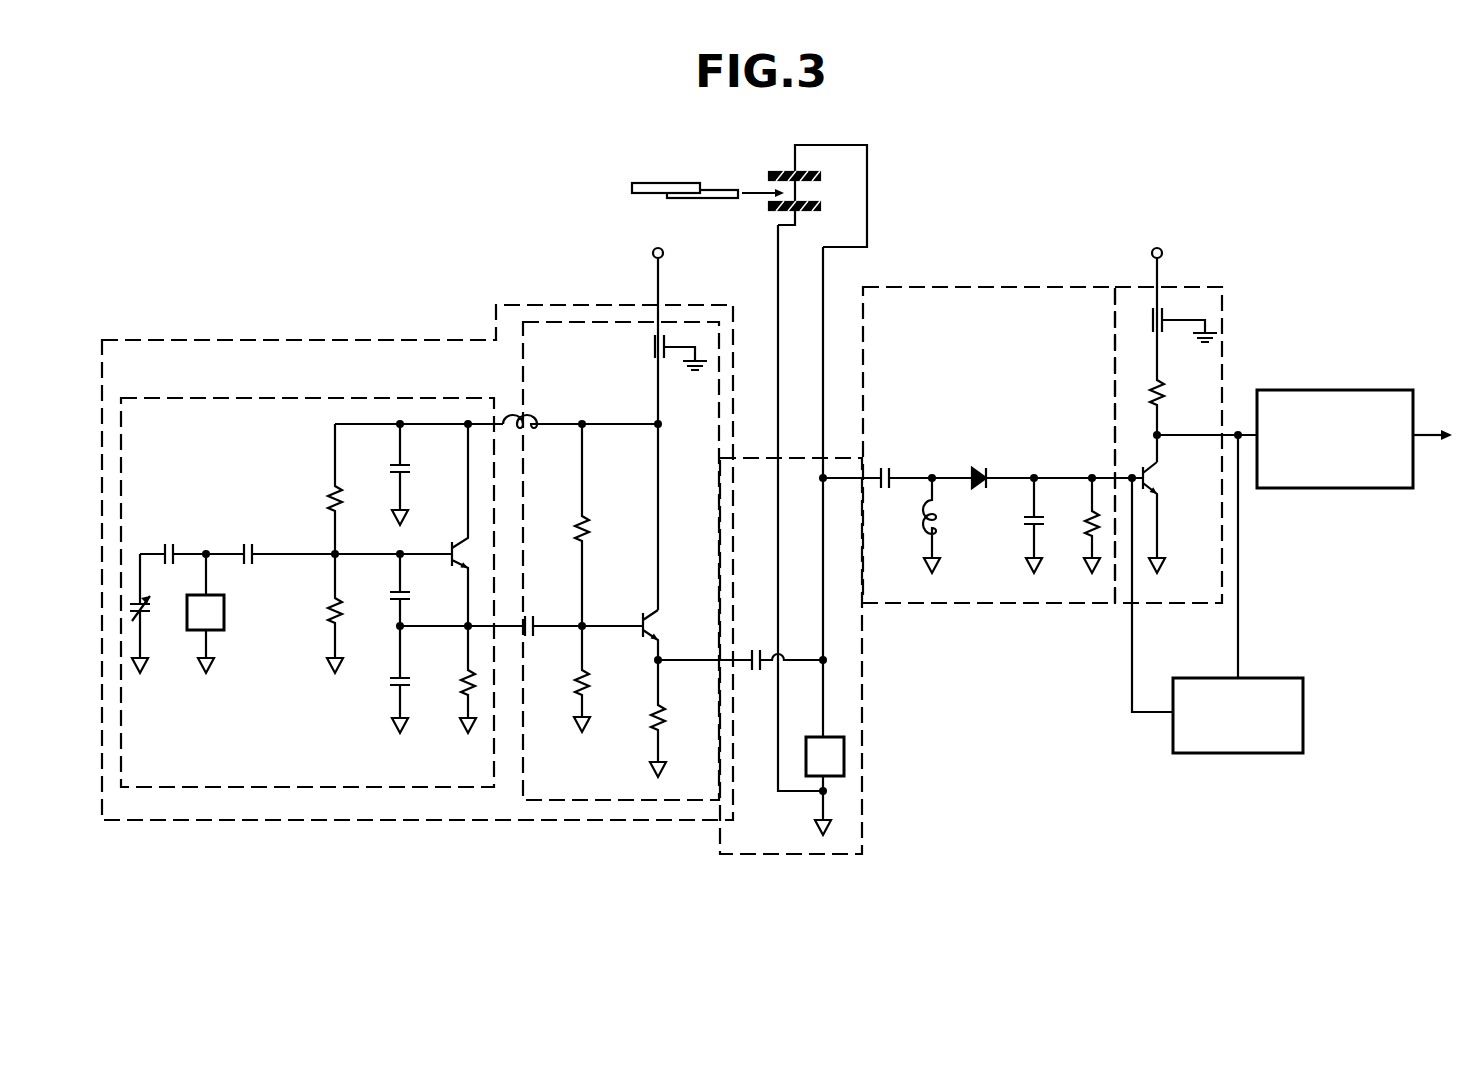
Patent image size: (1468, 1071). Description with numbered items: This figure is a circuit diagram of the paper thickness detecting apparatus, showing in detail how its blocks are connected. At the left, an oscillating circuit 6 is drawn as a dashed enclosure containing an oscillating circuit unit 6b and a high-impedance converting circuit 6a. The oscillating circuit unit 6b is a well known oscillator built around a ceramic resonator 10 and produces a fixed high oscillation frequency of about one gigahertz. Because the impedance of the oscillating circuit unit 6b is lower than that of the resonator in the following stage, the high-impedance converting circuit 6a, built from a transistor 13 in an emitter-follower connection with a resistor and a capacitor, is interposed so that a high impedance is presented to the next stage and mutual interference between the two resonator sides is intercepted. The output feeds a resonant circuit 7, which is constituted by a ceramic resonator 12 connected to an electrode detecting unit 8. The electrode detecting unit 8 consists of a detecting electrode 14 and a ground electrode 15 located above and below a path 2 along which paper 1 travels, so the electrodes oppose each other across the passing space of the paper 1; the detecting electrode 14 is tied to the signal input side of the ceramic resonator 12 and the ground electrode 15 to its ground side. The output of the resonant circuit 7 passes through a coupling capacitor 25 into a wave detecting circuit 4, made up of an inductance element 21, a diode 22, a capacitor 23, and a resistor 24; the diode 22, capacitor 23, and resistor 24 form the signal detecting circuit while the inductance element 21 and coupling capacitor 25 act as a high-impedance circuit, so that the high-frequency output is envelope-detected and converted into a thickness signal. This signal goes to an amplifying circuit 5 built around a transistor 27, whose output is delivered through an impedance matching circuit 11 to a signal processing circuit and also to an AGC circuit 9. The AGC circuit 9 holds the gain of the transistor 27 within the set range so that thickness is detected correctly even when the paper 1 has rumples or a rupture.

The paper 1 is at (654, 183).
The path 2 is at (820, 190).
The wave detecting circuit 4 is at (976, 287).
The amplifying circuit 5 is at (1220, 285).
The oscillating circuit 6 is at (228, 340).
The high-impedance converting circuit 6a is at (563, 321).
The oscillating circuit unit 6b is at (340, 398).
The resonant circuit 7 is at (803, 856).
The electrode detecting unit 8 is at (764, 176).
The AGC circuit 9 is at (1245, 753).
The ceramic resonator 10 is at (226, 612).
The impedance matching circuit 11 is at (1335, 390).
The ceramic resonator 12 is at (846, 757).
The transistor 13 is at (660, 626).
The detecting electrode 14 is at (816, 173).
The ground electrode 15 is at (818, 211).
The inductance element 21 is at (942, 520).
The diode 22 is at (980, 467).
The capacitor 23 is at (1046, 527).
The resistor 24 is at (1088, 515).
The coupling capacitor 25 is at (882, 465).
The transistor 27 is at (1162, 478).